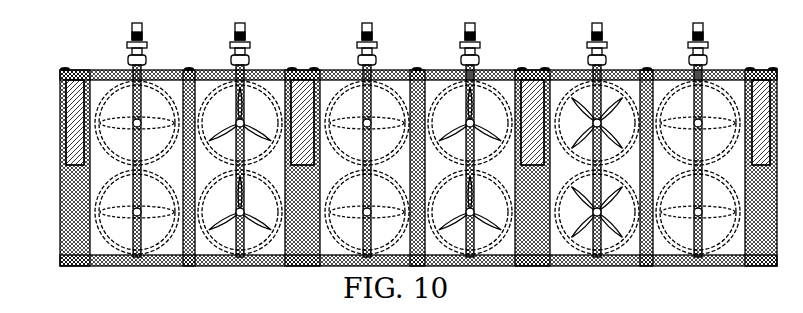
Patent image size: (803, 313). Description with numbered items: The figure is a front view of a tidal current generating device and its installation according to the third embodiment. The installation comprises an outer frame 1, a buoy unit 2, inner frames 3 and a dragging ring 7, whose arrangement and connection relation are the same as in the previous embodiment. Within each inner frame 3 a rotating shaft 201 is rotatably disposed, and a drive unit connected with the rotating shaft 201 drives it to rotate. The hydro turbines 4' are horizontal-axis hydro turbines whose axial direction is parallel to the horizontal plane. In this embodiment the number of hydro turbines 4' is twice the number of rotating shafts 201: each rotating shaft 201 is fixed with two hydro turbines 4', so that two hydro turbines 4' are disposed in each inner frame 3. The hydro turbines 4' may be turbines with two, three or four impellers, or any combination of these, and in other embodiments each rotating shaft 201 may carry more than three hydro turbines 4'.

The outer frame 1 is at (396, 168).
The buoy unit 2 is at (63, 92).
The inner frame 3 is at (52, 166).
The dragging ring 7 is at (63, 266).
The rotating shaft 201 is at (94, 140).
The hydro turbines 4' is at (116, 76).